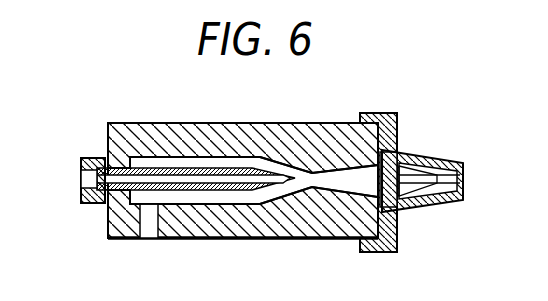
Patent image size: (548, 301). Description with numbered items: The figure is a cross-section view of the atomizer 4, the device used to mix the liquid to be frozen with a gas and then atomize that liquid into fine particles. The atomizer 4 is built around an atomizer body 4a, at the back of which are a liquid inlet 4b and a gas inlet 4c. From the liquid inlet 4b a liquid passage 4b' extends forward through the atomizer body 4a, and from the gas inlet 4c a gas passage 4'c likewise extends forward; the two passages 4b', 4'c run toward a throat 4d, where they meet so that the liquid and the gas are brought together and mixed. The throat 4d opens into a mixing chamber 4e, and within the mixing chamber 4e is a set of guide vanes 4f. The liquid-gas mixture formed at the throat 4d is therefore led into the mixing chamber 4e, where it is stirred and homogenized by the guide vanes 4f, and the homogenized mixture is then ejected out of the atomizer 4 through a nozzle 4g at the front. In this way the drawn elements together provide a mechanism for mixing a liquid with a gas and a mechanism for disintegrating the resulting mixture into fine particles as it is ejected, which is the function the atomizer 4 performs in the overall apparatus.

The atomizer 4 is at (205, 195).
The atomizer body 4a is at (162, 130).
The liquid inlet 4b is at (65, 180).
The liquid passage 4b' is at (196, 137).
The gas inlet 4c is at (152, 226).
The gas passage 4'c is at (195, 241).
The throat 4d is at (333, 183).
The mixing chamber 4e is at (392, 164).
The guide vanes 4f is at (430, 180).
The nozzle 4g is at (462, 177).